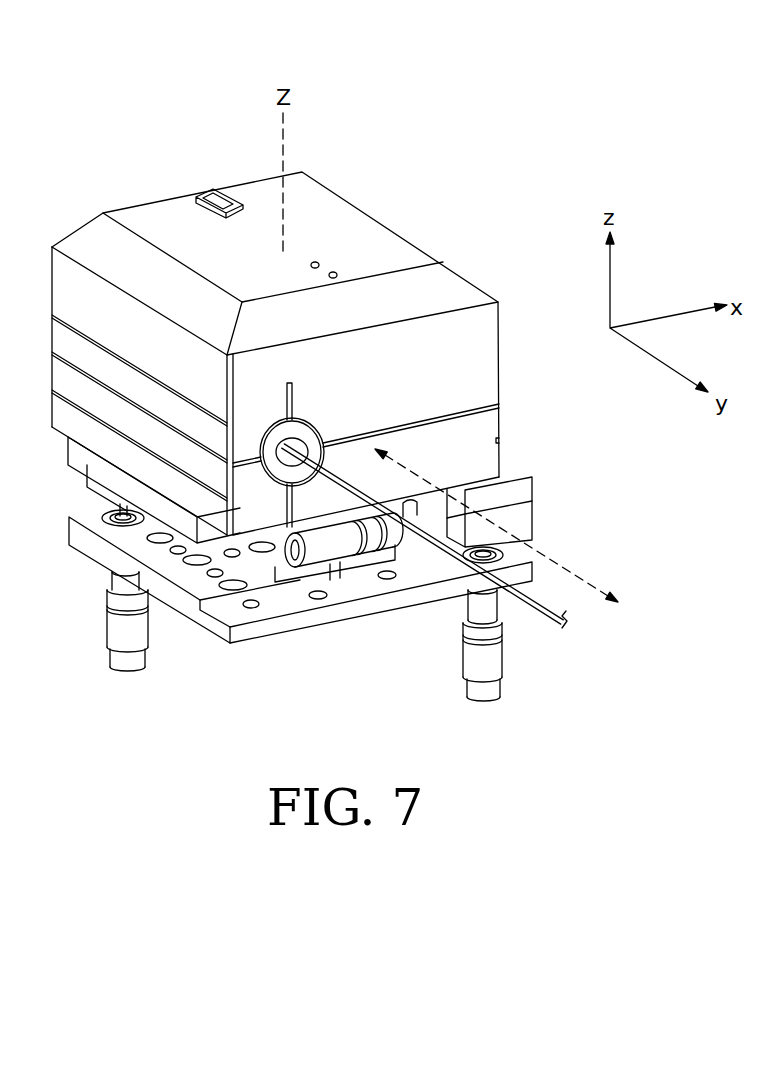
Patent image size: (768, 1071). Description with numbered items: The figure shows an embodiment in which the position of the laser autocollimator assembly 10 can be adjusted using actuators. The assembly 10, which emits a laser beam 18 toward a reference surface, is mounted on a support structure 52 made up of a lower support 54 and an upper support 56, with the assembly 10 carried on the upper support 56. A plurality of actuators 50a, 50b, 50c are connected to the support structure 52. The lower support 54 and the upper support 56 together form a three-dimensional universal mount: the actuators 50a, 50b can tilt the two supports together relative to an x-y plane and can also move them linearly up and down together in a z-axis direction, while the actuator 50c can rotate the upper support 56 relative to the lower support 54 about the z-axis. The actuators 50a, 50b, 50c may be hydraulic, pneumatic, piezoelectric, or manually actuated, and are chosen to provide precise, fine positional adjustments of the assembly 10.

The laser autocollimator assembly 10 is at (480, 191).
The laser beam 18 is at (539, 613).
The actuator 50a is at (128, 671).
The actuator 50b is at (483, 700).
The actuator 50c is at (330, 558).
The support structure 52 is at (541, 487).
The lower support 54 is at (253, 644).
The upper support 56 is at (517, 463).